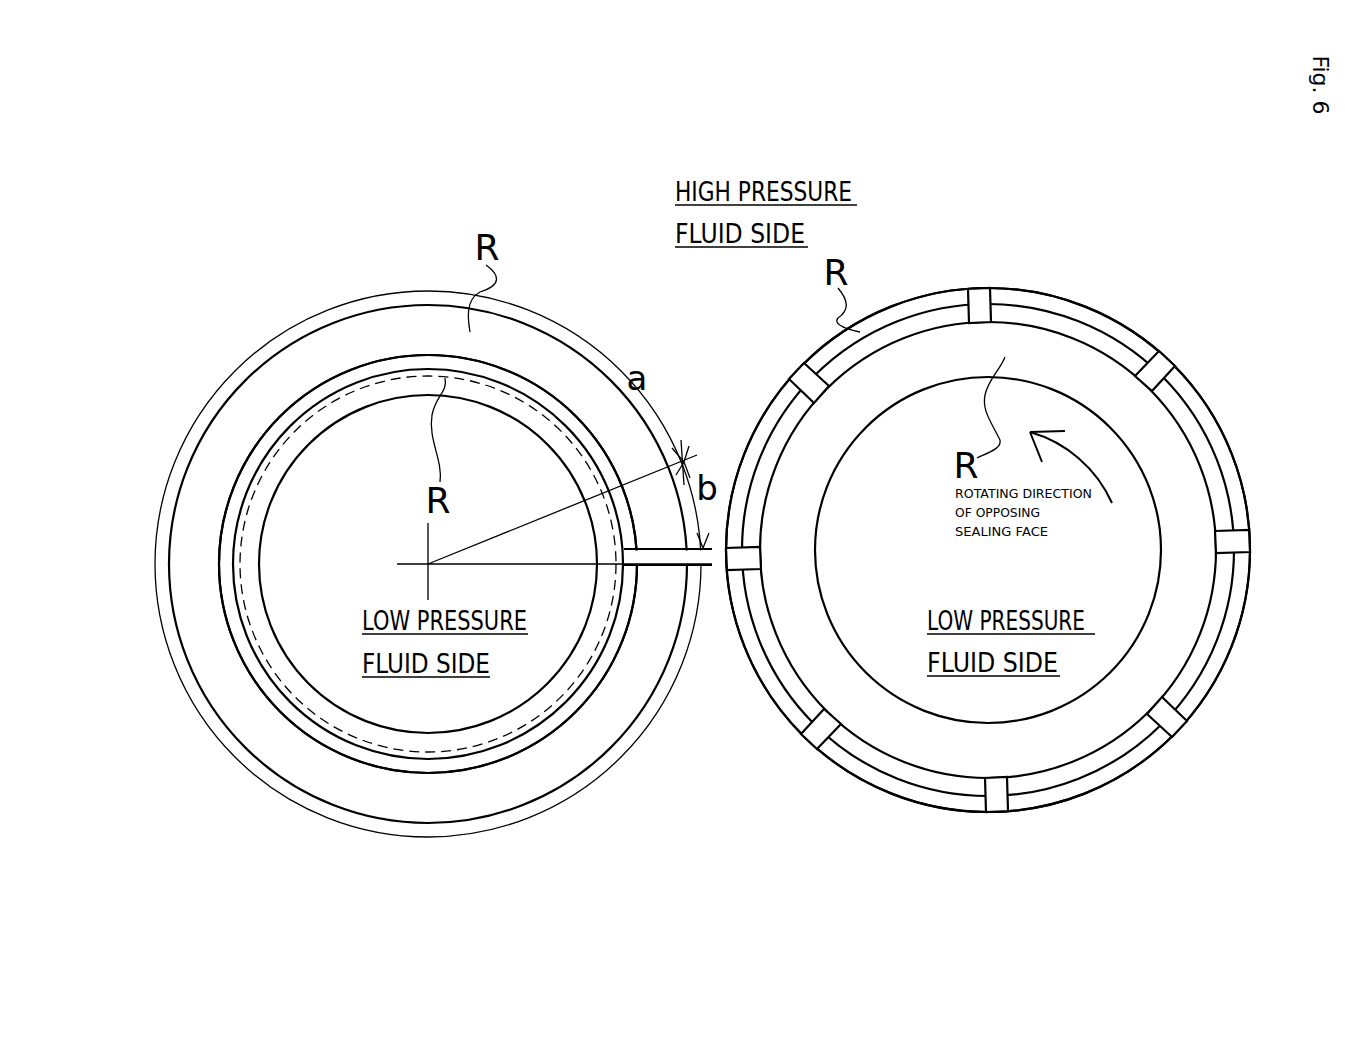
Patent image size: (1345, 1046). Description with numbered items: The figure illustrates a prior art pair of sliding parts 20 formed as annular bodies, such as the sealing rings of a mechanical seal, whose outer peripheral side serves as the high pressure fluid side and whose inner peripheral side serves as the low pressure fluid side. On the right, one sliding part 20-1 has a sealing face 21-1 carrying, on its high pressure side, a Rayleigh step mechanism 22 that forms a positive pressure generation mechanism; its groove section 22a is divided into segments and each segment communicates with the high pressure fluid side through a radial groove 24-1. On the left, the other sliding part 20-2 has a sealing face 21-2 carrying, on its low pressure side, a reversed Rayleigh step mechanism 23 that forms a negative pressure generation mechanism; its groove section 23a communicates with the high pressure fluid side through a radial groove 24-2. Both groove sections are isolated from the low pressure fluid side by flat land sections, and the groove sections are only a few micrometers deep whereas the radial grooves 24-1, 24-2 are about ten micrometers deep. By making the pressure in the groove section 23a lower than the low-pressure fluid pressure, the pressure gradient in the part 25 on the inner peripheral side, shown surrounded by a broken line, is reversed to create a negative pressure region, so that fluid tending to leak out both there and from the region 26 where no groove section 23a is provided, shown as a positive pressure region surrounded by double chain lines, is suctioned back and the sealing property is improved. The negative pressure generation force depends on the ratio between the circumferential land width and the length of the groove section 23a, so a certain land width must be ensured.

The sliding parts 20 is at (692, 823).
The one sliding part 20-1 is at (932, 295).
The other sliding part 20-2 is at (412, 301).
The sealing face of one sliding part 21-1 is at (1048, 303).
The sealing face of the other sliding part 21-2 is at (537, 355).
The Rayleigh step mechanism 22 is at (1124, 343).
The groove section of the Rayleigh step mechanism 22a is at (1093, 340).
The reversed Rayleigh step mechanism 23 is at (332, 376).
The groove section of the reversed Rayleigh step mechanism 23a is at (262, 444).
The radial groove 24-1 is at (983, 292).
The radial groove 24-2 is at (667, 566).
The part of the groove section on the inner peripheral side 25 is at (547, 413).
The region where no groove section is provided 26 is at (617, 516).